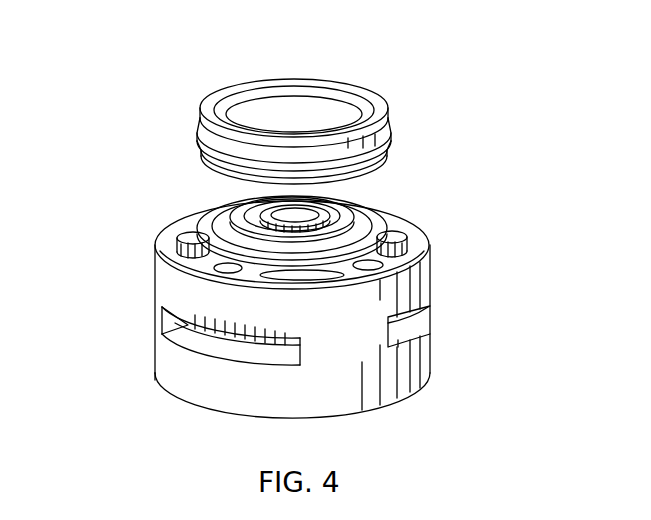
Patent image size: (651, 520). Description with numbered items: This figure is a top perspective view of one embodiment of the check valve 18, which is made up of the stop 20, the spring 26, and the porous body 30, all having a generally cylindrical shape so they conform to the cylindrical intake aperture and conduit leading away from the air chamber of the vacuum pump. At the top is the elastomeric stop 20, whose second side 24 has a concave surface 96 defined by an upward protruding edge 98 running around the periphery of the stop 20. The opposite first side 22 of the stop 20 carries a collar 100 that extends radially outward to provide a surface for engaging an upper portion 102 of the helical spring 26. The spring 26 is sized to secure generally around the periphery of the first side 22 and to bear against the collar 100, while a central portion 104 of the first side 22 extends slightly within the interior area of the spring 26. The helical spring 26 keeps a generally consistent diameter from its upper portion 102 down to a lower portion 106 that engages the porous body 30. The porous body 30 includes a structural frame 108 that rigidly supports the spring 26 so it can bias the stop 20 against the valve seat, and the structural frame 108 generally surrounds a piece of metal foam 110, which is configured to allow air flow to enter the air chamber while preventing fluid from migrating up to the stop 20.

The check valve 18 is at (110, 140).
The stop 20 is at (383, 127).
The first side 22 is at (213, 192).
The second side 24 is at (323, 110).
The spring 26 is at (377, 198).
The porous body 30 is at (415, 283).
The concave surface 96 is at (284, 109).
The upward protruding edge 98 is at (210, 102).
The collar 100 is at (390, 158).
The upper portion 102 is at (387, 181).
The central portion 104 is at (205, 200).
The lower portion 106 is at (383, 212).
The structural frame 108 is at (180, 380).
The metal foam 110 is at (183, 343).